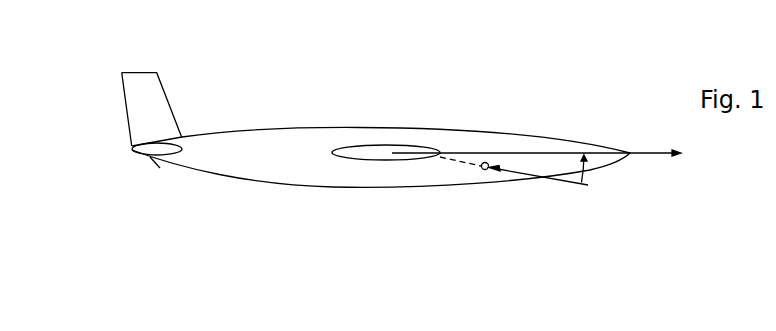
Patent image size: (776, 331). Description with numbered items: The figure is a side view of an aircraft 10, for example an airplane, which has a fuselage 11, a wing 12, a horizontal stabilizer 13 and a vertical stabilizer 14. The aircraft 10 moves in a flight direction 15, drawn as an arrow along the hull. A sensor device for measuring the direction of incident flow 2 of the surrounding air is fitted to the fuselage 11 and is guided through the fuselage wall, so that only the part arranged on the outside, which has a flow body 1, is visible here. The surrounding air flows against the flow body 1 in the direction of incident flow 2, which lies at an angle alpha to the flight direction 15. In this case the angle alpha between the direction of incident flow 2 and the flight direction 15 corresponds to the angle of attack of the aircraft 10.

The flow body 1 is at (491, 172).
The direction of incident flow 2 is at (573, 184).
The aircraft 10 is at (507, 88).
The fuselage 11 is at (308, 186).
The wing 12 is at (363, 148).
The horizontal stabilizer 13 is at (158, 167).
The vertical stabilizer 14 is at (165, 84).
The flight direction 15 is at (648, 152).